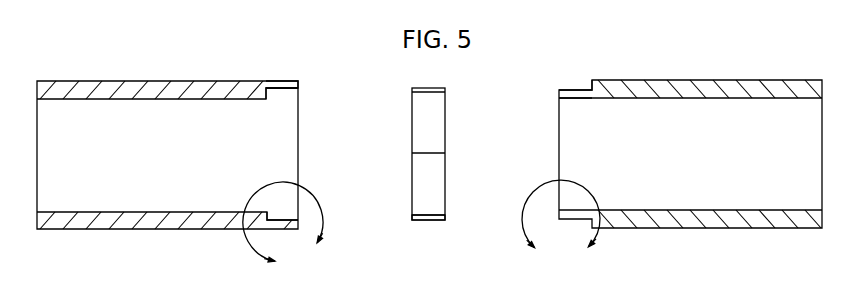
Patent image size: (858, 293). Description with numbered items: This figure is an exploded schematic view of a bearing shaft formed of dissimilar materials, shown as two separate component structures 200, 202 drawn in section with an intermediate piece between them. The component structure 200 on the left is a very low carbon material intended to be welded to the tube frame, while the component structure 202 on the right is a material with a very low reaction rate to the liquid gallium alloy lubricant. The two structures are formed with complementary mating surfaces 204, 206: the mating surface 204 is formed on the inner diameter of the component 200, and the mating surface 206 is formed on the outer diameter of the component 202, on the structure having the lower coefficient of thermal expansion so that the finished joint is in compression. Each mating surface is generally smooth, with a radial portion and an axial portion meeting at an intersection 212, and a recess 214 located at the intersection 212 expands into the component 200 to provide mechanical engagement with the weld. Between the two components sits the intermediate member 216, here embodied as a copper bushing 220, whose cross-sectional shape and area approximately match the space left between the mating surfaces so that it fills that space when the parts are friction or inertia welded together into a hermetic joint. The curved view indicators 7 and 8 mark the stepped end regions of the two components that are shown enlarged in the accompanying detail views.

The component structure 200 is at (102, 81).
The component structure 202 is at (698, 80).
The mating surface 204 is at (295, 88).
The mating surface 206 is at (577, 90).
The intersection 212 is at (267, 80).
The recess 214 is at (265, 217).
The intermediate member 216 is at (415, 222).
The copper bushing 220 is at (445, 115).
The section line 7- 7 is at (291, 236).
The section line 8- 8 is at (551, 235).